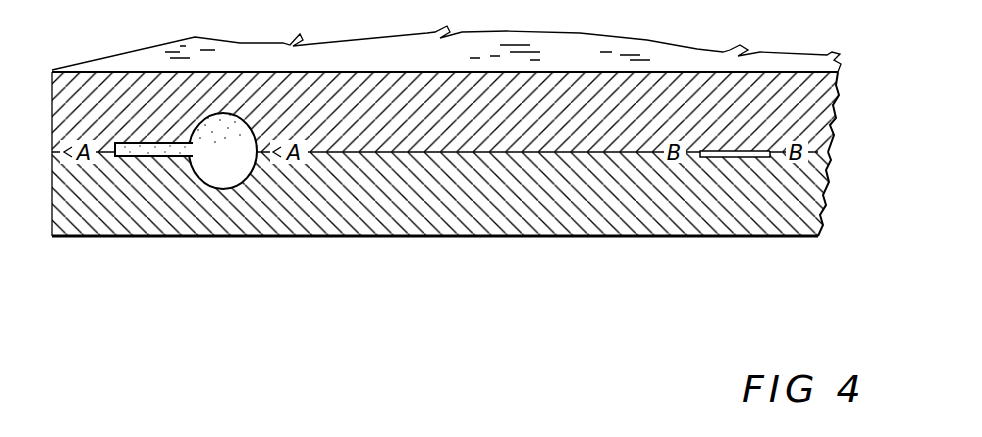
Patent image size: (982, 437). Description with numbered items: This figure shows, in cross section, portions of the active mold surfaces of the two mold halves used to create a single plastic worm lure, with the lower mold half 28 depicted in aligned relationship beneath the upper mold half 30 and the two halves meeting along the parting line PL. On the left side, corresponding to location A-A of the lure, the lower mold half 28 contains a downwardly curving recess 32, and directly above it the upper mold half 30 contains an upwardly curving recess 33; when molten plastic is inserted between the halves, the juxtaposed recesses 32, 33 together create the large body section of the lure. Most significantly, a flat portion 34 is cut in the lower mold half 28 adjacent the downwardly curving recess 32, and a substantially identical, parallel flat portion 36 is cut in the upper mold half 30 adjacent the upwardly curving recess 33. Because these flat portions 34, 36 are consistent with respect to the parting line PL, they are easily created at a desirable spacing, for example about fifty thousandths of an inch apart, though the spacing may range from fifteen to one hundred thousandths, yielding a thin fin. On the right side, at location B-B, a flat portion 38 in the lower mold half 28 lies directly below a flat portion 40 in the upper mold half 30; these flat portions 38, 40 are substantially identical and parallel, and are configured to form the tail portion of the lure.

The lower mold half 28 is at (814, 209).
The upper mold half 30 is at (819, 134).
The downwardly curving recess 32 is at (227, 190).
The upwardly curving recess 33 is at (232, 113).
The flat portion 34 is at (162, 157).
The flat portion 36 is at (135, 145).
The flat portion 38 is at (731, 158).
The flat portion 40 is at (722, 151).
The parting line PL is at (500, 153).